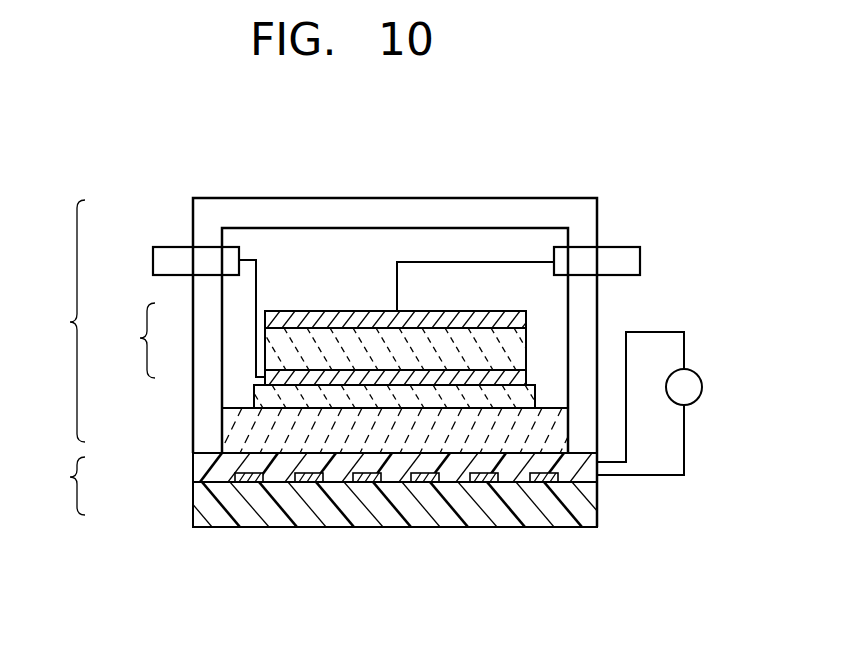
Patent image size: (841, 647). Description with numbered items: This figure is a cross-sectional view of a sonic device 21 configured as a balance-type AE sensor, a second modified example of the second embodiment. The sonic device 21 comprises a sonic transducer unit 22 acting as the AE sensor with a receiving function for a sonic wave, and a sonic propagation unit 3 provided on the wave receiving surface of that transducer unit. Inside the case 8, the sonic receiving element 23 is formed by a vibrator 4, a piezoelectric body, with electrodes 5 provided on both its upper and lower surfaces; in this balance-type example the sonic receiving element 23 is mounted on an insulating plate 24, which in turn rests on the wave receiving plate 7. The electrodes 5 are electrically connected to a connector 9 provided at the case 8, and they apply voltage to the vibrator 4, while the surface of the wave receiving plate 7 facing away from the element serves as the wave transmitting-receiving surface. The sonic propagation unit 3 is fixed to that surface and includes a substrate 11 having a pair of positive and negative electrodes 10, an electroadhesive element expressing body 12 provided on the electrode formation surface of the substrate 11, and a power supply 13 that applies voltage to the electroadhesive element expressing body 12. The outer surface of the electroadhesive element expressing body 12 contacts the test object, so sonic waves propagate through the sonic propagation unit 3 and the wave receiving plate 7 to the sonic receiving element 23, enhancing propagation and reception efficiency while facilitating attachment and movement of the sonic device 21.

The sonic propagation unit 3 is at (65, 486).
The vibrator 4 is at (280, 350).
The electrodes 5 is at (268, 316).
The wave receiving plate 7 is at (252, 437).
The case 8 is at (313, 197).
The connector 9 is at (176, 247).
The electrodes 10 is at (250, 483).
The substrate 11 is at (232, 473).
The electroadhesive element expressing body 12 is at (370, 510).
The power supply 13 is at (698, 374).
The sonic device 21 is at (584, 149).
The sonic transducer unit 22 is at (61, 321).
The sonic receiving element 23 is at (129, 340).
The insulating plate 24 is at (266, 400).